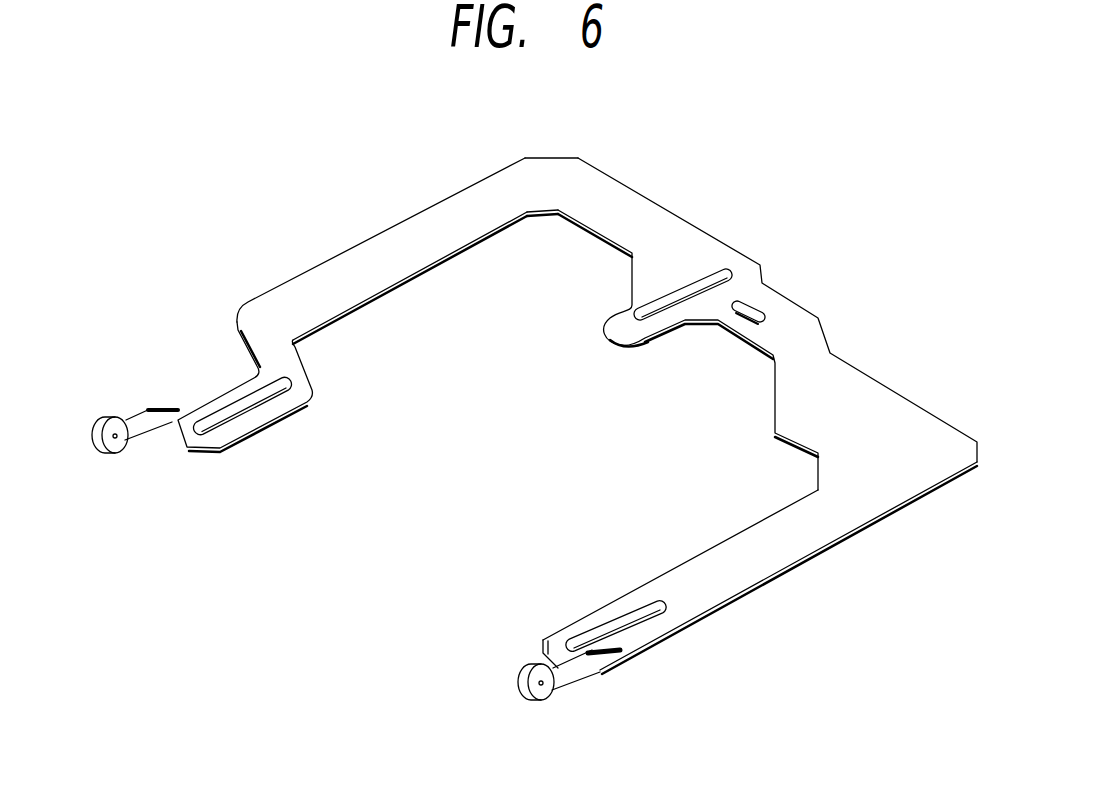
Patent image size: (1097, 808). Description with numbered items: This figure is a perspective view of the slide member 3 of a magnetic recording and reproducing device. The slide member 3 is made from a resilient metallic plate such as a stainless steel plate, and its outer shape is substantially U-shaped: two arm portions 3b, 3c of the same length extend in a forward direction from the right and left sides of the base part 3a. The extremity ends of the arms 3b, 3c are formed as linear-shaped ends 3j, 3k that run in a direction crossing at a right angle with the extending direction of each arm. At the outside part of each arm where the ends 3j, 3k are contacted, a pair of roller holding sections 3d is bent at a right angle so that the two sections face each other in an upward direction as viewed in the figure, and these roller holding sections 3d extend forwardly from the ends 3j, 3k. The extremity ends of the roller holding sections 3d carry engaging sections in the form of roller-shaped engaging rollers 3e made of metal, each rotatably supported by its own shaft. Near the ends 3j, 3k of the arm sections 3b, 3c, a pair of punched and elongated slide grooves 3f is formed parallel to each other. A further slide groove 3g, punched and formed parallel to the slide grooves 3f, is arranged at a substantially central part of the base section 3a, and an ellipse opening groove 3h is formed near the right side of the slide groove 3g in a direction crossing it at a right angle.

The slide member 3 is at (440, 194).
The base part 3a is at (642, 220).
The arm portion 3b is at (805, 528).
The arm portion 3c is at (377, 257).
The roller holding section 3d is at (145, 407).
The engaging roller 3e is at (93, 420).
The slide groove 3f is at (252, 404).
The slide groove 3g is at (700, 272).
The ellipse opening groove 3h is at (755, 302).
The linear-shaped end 3j is at (168, 443).
The linear-shaped end 3k is at (540, 643).